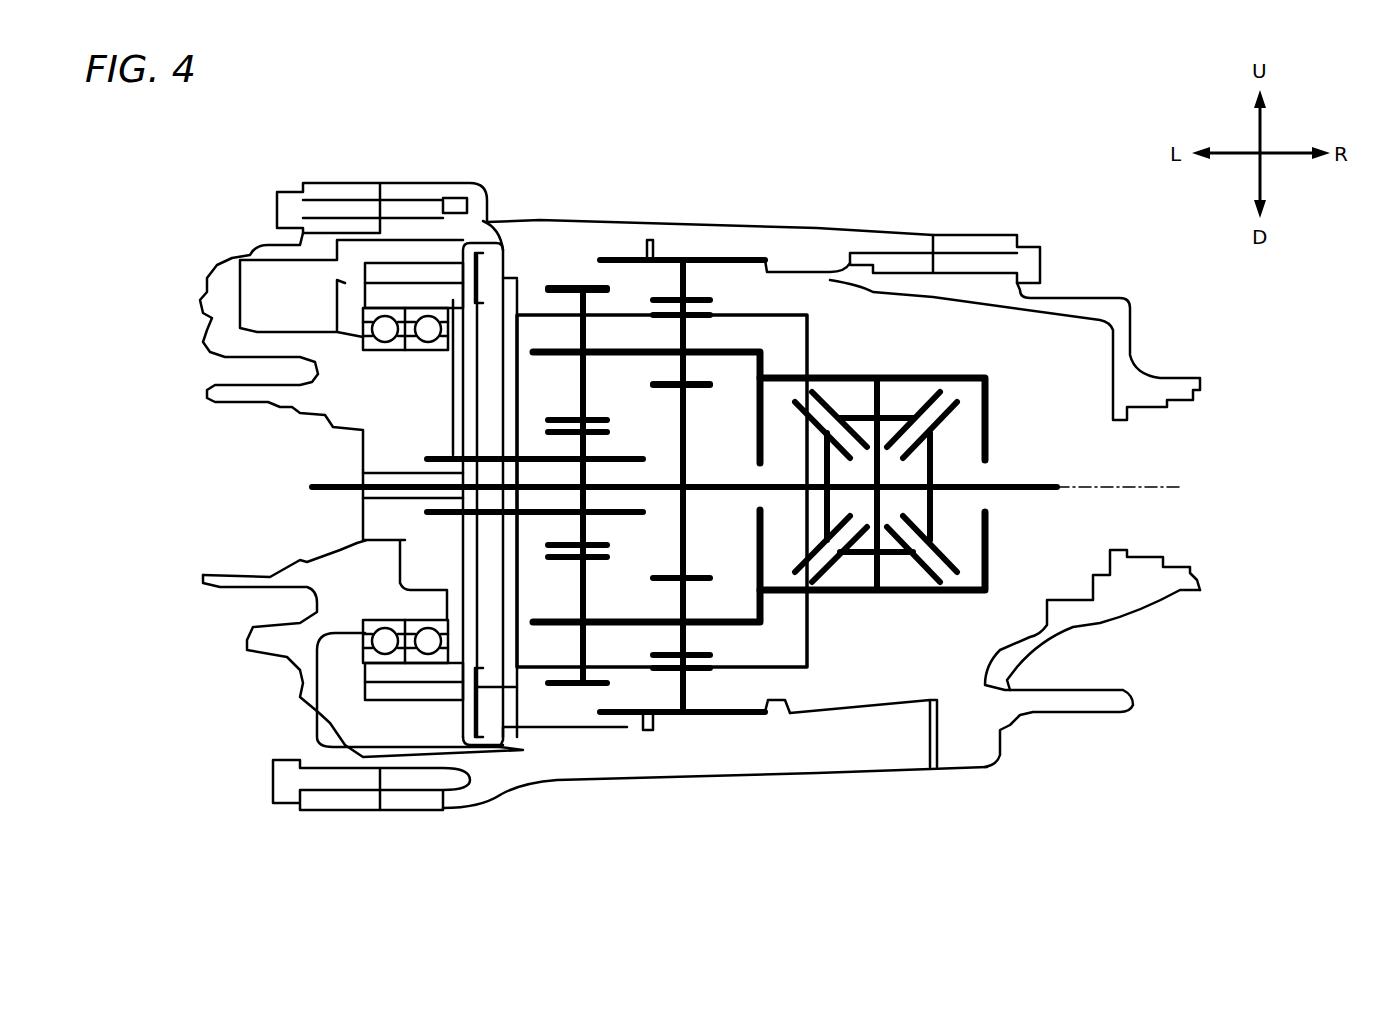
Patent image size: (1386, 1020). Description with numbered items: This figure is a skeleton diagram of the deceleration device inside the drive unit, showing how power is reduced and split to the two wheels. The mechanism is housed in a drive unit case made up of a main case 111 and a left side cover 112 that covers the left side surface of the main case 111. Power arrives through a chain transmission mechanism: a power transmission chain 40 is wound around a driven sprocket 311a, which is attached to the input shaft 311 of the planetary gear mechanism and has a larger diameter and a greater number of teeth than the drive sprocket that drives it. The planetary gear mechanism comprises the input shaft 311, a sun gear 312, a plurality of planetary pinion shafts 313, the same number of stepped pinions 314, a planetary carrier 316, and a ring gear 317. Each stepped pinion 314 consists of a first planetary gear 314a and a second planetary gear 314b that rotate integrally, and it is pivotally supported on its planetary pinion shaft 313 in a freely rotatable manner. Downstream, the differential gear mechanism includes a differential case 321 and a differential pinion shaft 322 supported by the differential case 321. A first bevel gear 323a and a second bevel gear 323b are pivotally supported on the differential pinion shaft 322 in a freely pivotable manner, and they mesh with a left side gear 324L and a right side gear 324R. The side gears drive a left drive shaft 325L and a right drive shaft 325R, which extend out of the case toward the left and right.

The power transmission chain 40 is at (387, 668).
The main case 111 is at (662, 230).
The left side cover 112 is at (255, 245).
The input shaft 311 is at (458, 272).
The driven sprocket 311a is at (407, 700).
The sun gear 312 is at (545, 545).
The planetary pinion shaft 313 is at (620, 348).
The stepped pinion 314 is at (728, 265).
The first planetary gear 314a is at (570, 282).
The second planetary gear 314b is at (703, 382).
The planetary carrier 316 is at (745, 345).
The ring gear 317 is at (712, 250).
The differential case 321 is at (913, 375).
The differential pinion shaft 322 is at (897, 478).
The first bevel gear 323a is at (957, 375).
The second bevel gear 323b is at (953, 592).
The left side gear 324L is at (808, 610).
The right side gear 324R is at (957, 412).
The left drive shaft 325L is at (318, 472).
The right drive shaft 325R is at (1045, 487).